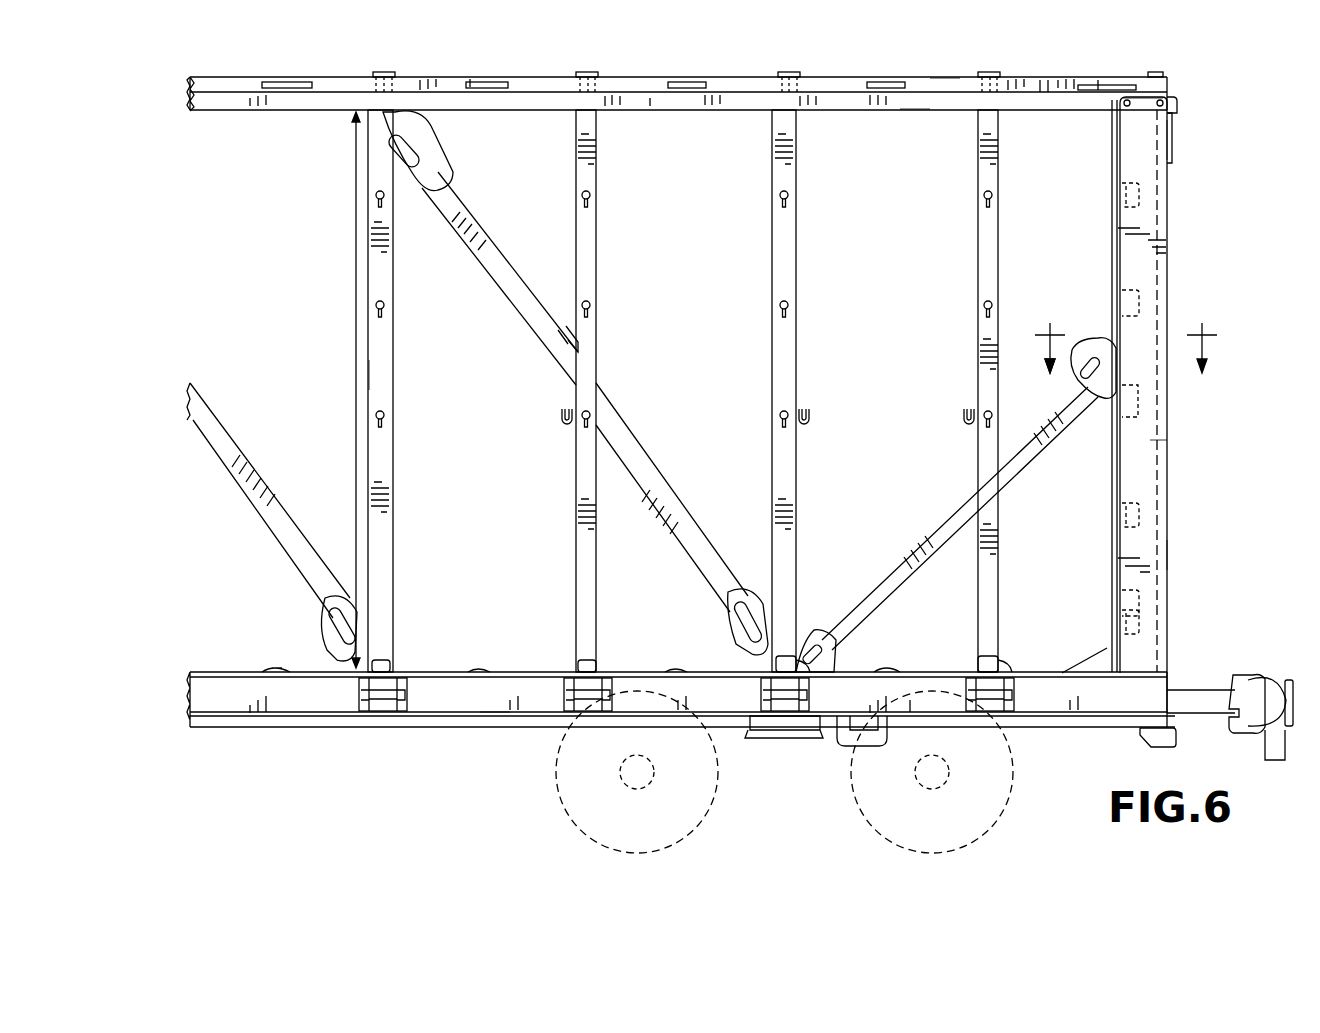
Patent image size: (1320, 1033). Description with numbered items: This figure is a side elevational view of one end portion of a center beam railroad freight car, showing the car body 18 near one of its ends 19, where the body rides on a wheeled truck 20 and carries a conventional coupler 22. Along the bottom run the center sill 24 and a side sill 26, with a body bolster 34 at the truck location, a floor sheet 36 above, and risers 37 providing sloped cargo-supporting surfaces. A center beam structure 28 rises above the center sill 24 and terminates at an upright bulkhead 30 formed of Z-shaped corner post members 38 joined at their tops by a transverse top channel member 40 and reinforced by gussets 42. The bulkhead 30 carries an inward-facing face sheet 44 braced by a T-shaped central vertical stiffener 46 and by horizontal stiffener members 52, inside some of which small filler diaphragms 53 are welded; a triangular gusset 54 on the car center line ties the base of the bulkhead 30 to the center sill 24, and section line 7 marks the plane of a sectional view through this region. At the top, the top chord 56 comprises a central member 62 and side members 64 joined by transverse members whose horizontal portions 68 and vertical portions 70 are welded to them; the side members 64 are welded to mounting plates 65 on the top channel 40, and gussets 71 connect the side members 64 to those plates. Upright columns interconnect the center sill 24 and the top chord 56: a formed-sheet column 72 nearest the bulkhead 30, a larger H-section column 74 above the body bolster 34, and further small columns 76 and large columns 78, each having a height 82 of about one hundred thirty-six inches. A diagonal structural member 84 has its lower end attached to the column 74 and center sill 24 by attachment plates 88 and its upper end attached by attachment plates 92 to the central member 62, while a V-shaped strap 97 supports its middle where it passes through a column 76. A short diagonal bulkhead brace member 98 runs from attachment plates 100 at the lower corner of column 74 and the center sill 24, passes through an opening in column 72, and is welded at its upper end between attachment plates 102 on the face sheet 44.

The section line 7- 7 is at (1127, 344).
The car body 18 is at (1175, 484).
The opposite ends 19 is at (1167, 560).
The wheeled trucks 20 is at (986, 820).
The coupler 22 is at (1278, 678).
The center sill 24 is at (432, 727).
The side sills 26 is at (493, 712).
The center beam structure 28 is at (693, 75).
The bulkhead 30 is at (1168, 230).
The body bolster 34 is at (785, 738).
The floor sheet 36 is at (440, 670).
The risers 37 is at (780, 590).
The corner post members 38 is at (1140, 257).
The top channel member 40 is at (1175, 98).
The gussets 42 is at (1172, 148).
The face sheet 44 is at (1110, 556).
The central vertical stiffener 46 is at (1165, 446).
The horizontal stiffener members 52 is at (1140, 305).
The filler diaphragms 53 is at (1140, 195).
The triangular gusset 54 is at (1095, 660).
The top chord 56 is at (1045, 77).
The central member 62 is at (912, 106).
The side members 64 is at (939, 86).
The mounting plate 65 is at (1150, 72).
The horizontal transverse portion 68 is at (387, 72).
The vertical transverse portion 70 is at (575, 88).
The gussets 71 is at (1105, 85).
The column 72 is at (998, 240).
The column 74 is at (772, 242).
The small columns 76 is at (596, 240).
The large columns 78 is at (393, 370).
The height 82 is at (355, 237).
The diagonal structural members 84 is at (291, 525).
The attachment plates 88 is at (325, 640).
The attachment plates 92 is at (430, 160).
The V-shaped strap 97 is at (566, 325).
The diagonal bulkhead brace member 98 is at (1020, 444).
The attachment plates 100 is at (838, 658).
The attachment plates 102 is at (1098, 338).